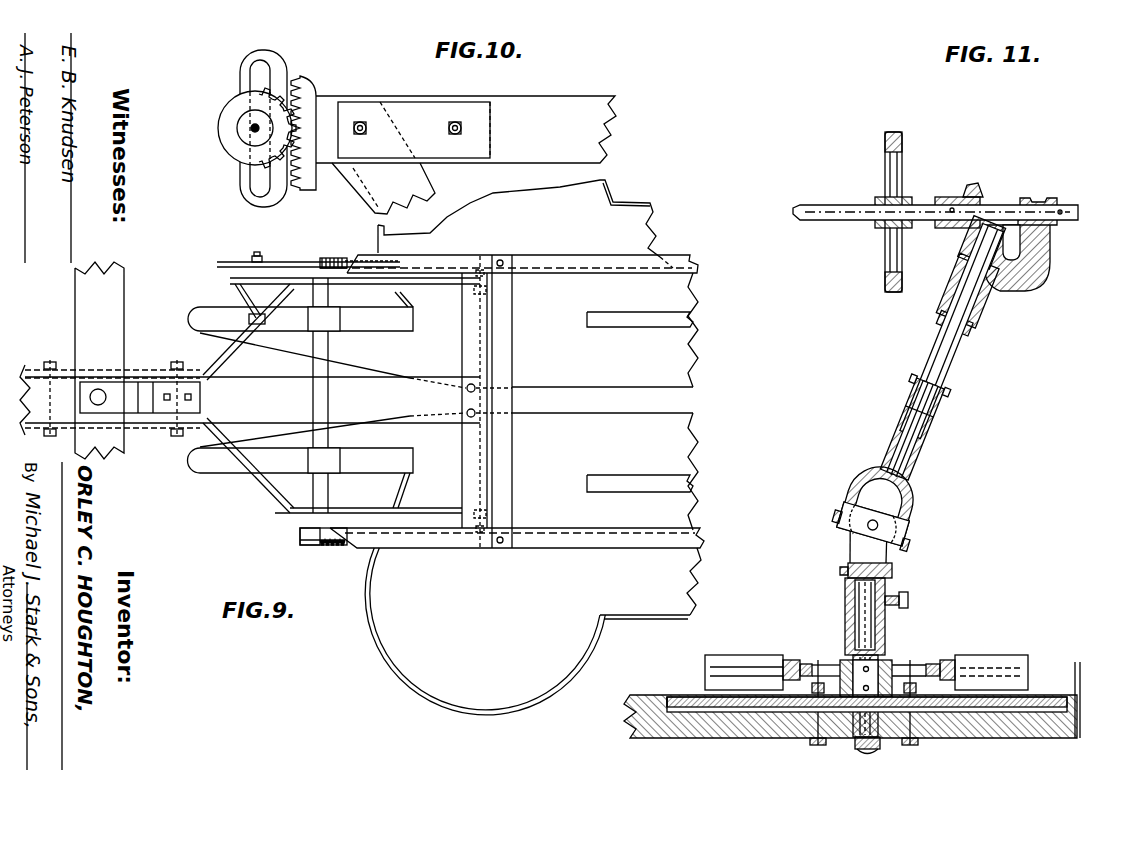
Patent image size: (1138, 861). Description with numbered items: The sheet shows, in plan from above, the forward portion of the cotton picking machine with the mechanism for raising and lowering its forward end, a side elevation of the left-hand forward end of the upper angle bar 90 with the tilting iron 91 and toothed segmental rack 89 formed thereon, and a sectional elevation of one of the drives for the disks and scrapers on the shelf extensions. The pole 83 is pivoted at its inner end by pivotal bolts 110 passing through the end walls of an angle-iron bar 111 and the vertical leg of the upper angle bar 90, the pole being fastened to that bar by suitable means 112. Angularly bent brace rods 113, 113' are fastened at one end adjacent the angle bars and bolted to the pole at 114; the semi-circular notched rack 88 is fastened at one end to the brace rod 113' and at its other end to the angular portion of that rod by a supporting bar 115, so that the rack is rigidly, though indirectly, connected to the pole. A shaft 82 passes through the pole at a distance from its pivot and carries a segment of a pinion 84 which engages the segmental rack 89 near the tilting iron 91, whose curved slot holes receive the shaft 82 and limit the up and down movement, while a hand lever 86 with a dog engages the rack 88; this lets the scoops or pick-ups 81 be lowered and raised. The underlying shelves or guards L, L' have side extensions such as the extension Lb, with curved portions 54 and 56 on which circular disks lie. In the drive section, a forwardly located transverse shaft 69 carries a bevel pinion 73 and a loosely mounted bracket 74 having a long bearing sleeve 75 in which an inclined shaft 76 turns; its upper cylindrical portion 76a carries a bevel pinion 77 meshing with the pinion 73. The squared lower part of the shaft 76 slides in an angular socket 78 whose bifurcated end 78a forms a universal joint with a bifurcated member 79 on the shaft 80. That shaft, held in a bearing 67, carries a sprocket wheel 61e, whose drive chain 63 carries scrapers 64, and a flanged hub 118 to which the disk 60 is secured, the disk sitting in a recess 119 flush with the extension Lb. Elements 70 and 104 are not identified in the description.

In FIG. 9, the curved portion 54 is at (525, 224).
In FIG. 9, the curved portion 56 is at (533, 631).
In FIG. 11, the curved portion 56 is at (850, 716).
In FIG. 11, the circular disk 60 is at (1040, 707).
In FIG. 11, the sprocket wheel 61e is at (915, 663).
In FIG. 11, the drive chain 63 is at (790, 656).
In FIG. 11, the scraper 64 is at (748, 663).
In FIG. 11, the bearing 67 is at (856, 745).
In FIG. 11, the transverse shaft 69 is at (935, 200).
In FIG. 11, the wheel 70 is at (900, 212).
In FIG. 11, the bevel pinion 73 is at (973, 184).
In FIG. 11, the bracket 74 is at (1033, 244).
In FIG. 11, the bearing sleeve 75 is at (978, 313).
In FIG. 11, the inclined shaft 76 is at (942, 366).
In FIG. 11, the upper cylindrical portion 76a is at (956, 290).
In FIG. 11, the bevel pinion 77 is at (966, 245).
In FIG. 11, the angular socket 78 is at (924, 438).
In FIG. 11, the bifurcated end 78a is at (912, 516).
In FIG. 11, the bifurcated member 79 is at (860, 556).
In FIG. 11, the shaft 80 is at (850, 645).
In FIG. 9, the scoop 81 is at (200, 322).
In FIG. 10, the shaft 82 is at (250, 125).
In FIG. 9, the shaft 82 is at (333, 258).
In FIG. 9, the pole 83 is at (250, 400).
In FIG. 10, the segment of a pinion 84 is at (226, 137).
In FIG. 9, the hand lever 86 is at (257, 256).
In FIG. 9, the semi-circular rack 88 is at (226, 278).
In FIG. 10, the segmental rack 89 is at (305, 184).
In FIG. 9, the segmental rack 89 is at (315, 547).
In FIG. 10, the upper angle bar 90 is at (466, 155).
In FIG. 9, the upper angle bar 90 is at (355, 566).
In FIG. 10, the tilting iron 91 is at (246, 128).
In FIG. 9, the tilting iron 91 is at (300, 540).
In FIG. 9, the rim 104 is at (520, 698).
In FIG. 11, the rim 104 is at (1082, 676).
In FIG. 9, the pivotal bolt 110 is at (478, 262).
In FIG. 9, the angle-iron bar 111 is at (470, 348).
In FIG. 9, the fastening means 112 is at (466, 390).
In FIG. 9, the brace rod 113 is at (421, 493).
In FIG. 9, the brace rod 113' is at (425, 301).
In FIG. 9, the bolt 114 is at (50, 366).
In FIG. 9, the supporting bar 115 is at (230, 286).
In FIG. 11, the flanged hub 118 is at (800, 688).
In FIG. 11, the recess 119 is at (668, 696).
In FIG. 9, the underlying shelf L is at (605, 330).
In FIG. 9, the underlying shelf L' is at (605, 471).
In FIG. 11, the side extension Lb is at (965, 753).